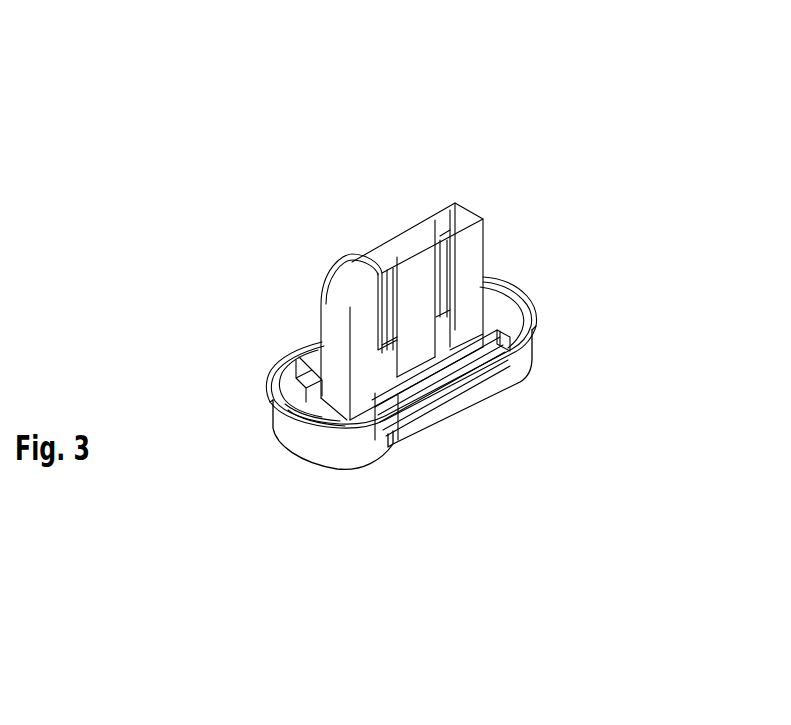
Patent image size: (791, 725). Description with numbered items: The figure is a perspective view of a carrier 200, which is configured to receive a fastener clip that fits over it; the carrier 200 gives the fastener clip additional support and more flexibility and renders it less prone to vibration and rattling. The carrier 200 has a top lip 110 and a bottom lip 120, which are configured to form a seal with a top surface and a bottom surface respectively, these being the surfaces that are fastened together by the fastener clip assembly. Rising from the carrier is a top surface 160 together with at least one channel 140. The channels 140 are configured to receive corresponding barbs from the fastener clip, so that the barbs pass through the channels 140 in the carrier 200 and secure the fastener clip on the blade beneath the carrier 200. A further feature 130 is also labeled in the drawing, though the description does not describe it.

The carrier 200 is at (163, 93).
The top lip 110 is at (538, 322).
The bottom lip 120 is at (521, 381).
The pocket 130 is at (298, 380).
The channel 140 is at (384, 301).
The top surface 160 is at (393, 233).